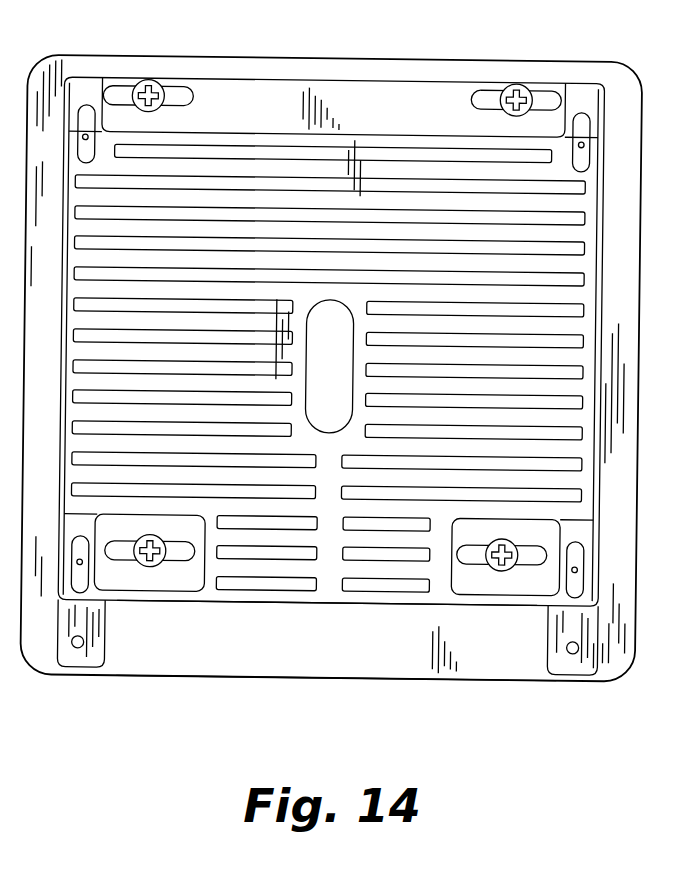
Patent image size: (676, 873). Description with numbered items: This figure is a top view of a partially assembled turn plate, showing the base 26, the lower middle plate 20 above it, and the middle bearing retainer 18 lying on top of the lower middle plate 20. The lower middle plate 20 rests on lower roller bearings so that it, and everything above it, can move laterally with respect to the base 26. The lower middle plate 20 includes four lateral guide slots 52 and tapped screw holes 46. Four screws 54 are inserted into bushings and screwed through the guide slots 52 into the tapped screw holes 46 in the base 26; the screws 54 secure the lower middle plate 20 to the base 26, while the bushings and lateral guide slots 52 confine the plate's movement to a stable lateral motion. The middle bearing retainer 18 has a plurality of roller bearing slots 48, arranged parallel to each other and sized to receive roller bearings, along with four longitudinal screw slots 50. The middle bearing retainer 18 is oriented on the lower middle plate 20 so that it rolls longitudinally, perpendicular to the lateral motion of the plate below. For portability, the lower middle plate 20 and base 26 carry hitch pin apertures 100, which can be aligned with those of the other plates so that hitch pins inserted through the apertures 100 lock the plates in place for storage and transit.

The middle bearing retainer 18 is at (352, 603).
The lower middle plate 20 is at (352, 80).
The base 26 is at (472, 683).
The tapped screw holes 46 is at (85, 137).
The roller bearing slots 48 is at (298, 591).
The longitudinal screw slots 50 is at (73, 161).
The lateral guide slots 52 is at (186, 88).
The screws 54 is at (148, 81).
The hitch pin apertures 100 is at (79, 652).